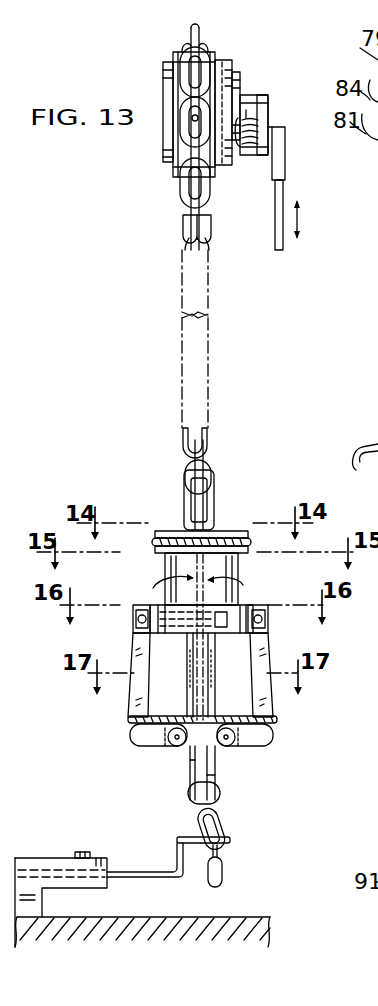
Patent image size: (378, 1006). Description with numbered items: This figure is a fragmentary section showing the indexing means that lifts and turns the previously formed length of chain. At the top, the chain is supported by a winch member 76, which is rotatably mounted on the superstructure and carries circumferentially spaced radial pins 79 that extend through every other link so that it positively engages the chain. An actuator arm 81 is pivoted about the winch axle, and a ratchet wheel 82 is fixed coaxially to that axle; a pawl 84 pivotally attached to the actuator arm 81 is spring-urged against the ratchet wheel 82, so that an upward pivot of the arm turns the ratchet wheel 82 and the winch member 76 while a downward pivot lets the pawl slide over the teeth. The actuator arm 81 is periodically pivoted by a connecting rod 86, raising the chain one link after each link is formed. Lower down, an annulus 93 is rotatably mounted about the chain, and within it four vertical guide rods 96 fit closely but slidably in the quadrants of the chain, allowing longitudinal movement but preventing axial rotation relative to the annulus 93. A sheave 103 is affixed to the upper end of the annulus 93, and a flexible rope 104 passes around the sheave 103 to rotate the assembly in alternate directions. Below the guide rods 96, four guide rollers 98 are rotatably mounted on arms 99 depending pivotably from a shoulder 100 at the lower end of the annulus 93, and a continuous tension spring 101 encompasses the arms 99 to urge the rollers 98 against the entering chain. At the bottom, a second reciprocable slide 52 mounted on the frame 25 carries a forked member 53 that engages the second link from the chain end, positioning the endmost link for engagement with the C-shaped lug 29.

The winch member 76 is at (180, 56).
The radial pins 79 is at (196, 118).
The actuator arm 81 is at (268, 140).
The ratchet wheel 82 is at (236, 80).
The pawl 84 is at (246, 152).
The connecting rod 86 is at (272, 229).
The C-shaped lug 29 is at (196, 218).
The vertical guide rods 96 is at (198, 505).
The flexible rope 104 is at (171, 533).
The sheave 103 is at (227, 532).
The annulus 93 is at (228, 569).
The shoulder 100 is at (239, 632).
The arms 99 is at (196, 687).
The continuous tension spring 101 is at (157, 717).
The guide rollers 98 is at (186, 749).
The forked member 53 is at (187, 835).
The second reciprocable slide 52 is at (62, 858).
The frame 25 is at (160, 923).